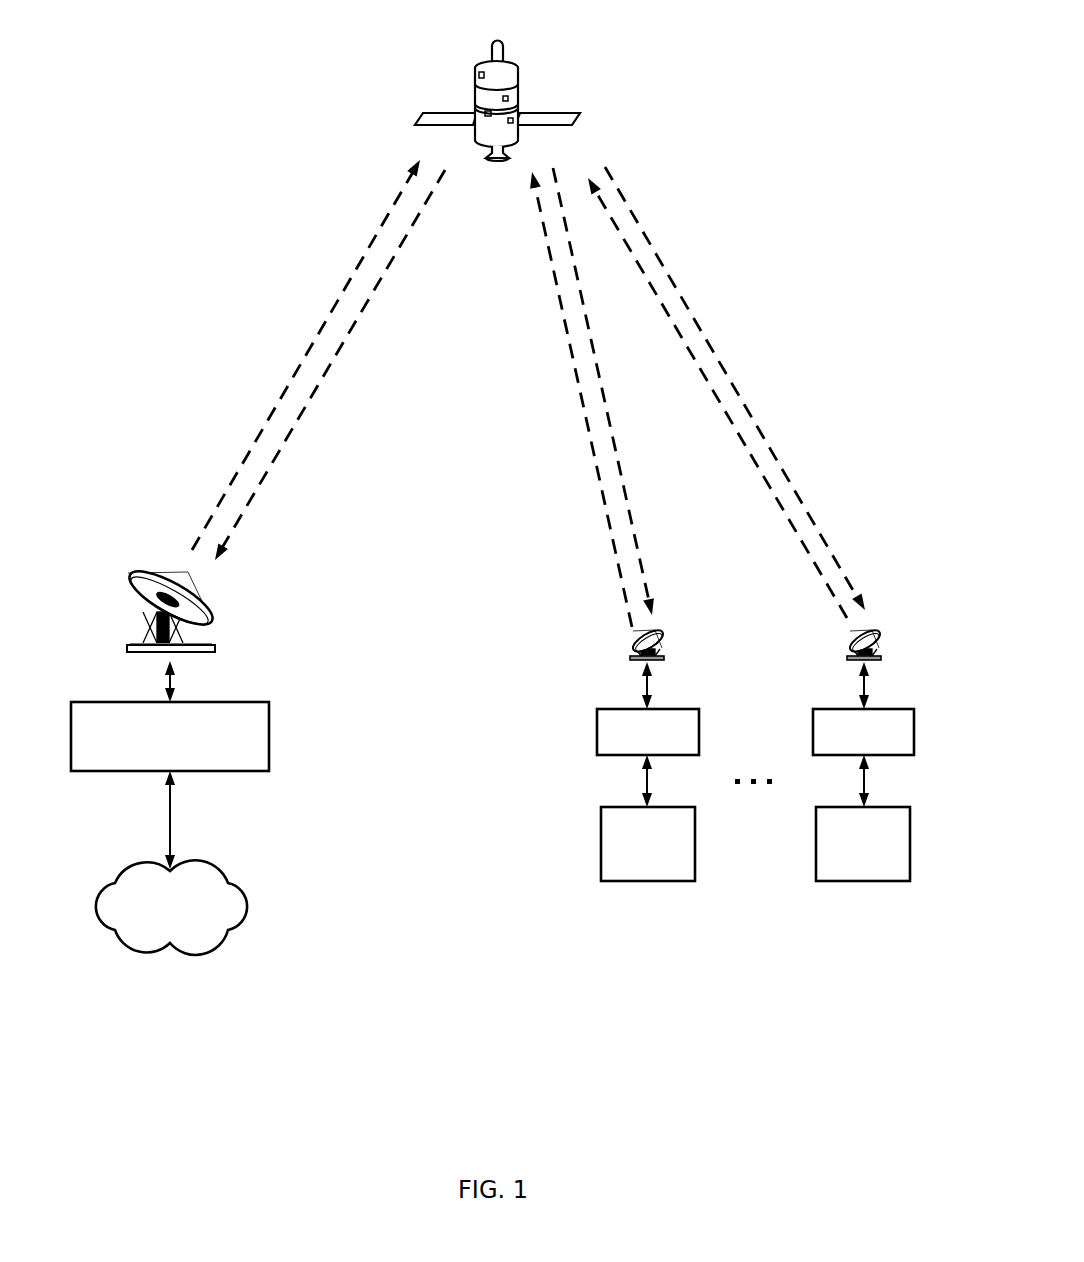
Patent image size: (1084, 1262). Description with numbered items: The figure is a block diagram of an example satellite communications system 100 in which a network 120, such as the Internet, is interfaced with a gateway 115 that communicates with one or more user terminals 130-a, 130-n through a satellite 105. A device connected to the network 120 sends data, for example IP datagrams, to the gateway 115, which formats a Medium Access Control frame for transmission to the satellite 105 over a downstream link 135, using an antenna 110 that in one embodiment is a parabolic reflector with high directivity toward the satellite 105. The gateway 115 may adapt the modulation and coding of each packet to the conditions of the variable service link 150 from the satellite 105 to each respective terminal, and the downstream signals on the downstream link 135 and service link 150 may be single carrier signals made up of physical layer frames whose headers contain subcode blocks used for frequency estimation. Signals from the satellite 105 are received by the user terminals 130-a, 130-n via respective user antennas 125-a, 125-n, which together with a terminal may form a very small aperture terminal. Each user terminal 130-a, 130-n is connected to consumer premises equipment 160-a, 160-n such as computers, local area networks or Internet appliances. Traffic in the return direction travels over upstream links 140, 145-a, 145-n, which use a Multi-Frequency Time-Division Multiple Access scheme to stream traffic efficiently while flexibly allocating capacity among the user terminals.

The satellite communications system 100 is at (748, 976).
The satellite 105 is at (497, 48).
The antenna 110 is at (213, 624).
The gateway 115 is at (269, 738).
The network 120 is at (252, 910).
The user antenna 125-a is at (633, 648).
The user antenna 125-n is at (849, 648).
The user terminal 130-a is at (597, 728).
The user terminal 130-n is at (813, 728).
The downstream link 135 is at (305, 358).
The upstream link 140 is at (375, 290).
The upstream link 145-a is at (583, 405).
The upstream link 145-n is at (722, 406).
The service link 150 is at (672, 288).
The consumer premises equipment 160-a is at (628, 881).
The consumer premises equipment 160-n is at (845, 881).